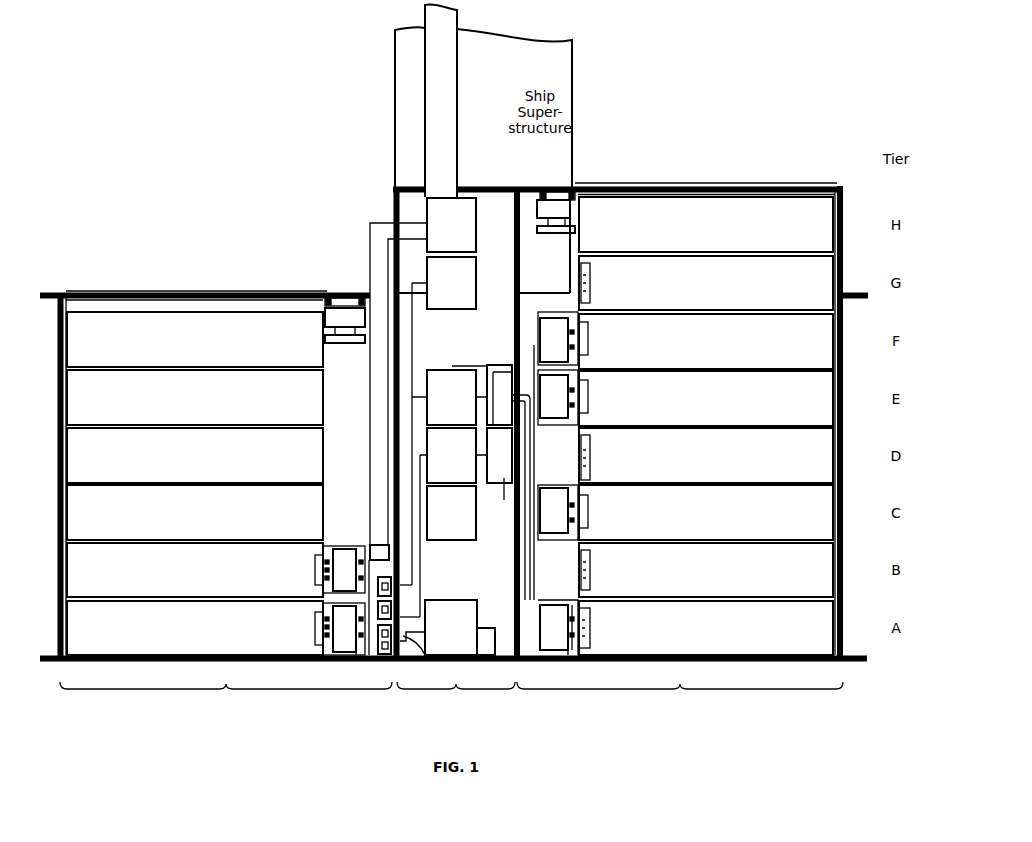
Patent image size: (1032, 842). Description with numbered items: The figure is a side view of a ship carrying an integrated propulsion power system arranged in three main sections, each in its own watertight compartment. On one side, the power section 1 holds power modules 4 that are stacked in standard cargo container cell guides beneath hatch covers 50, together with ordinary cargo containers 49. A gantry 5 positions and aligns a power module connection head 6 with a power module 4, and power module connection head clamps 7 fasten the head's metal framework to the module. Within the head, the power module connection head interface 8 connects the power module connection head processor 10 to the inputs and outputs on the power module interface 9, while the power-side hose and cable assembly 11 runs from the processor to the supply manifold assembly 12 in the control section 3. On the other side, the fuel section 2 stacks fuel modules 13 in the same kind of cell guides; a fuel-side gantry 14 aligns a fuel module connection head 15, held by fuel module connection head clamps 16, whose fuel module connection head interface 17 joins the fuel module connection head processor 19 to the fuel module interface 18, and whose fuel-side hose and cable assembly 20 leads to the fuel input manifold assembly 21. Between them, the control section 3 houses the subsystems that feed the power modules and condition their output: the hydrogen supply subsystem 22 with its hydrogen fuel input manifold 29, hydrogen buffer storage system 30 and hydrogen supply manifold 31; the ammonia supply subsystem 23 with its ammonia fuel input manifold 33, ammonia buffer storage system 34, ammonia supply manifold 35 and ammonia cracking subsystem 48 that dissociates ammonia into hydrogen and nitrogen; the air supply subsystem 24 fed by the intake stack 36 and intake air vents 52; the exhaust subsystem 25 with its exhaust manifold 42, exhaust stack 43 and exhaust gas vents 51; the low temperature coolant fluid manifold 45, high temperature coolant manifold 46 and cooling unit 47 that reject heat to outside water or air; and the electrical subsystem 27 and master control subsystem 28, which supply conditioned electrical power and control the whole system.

The power section 1 is at (226, 696).
The fuel section 2 is at (680, 696).
The control section 3 is at (456, 696).
The power module 4 is at (195, 599).
The gantry 5 is at (345, 300).
The power module connection head 6 is at (347, 546).
The power module connection head clamps 7 is at (325, 609).
The power module connection head interface 8 is at (324, 630).
The power module interface 9 is at (318, 627).
The power module connection head processor 10 is at (344, 629).
The power-side hose and cable assembly 11 is at (355, 662).
The supply manifold assembly 12 is at (383, 662).
The fuel module 13 is at (706, 455).
The fuel-side gantry 14 is at (563, 197).
The fuel module connection head 15 is at (556, 600).
The fuel module connection head clamps 16 is at (576, 605).
The fuel module connection head interface 17 is at (566, 655).
The fuel module interface 18 is at (590, 628).
The fuel module connection head processor 19 is at (554, 627).
The fuel-side hose and cable assembly 20 is at (536, 566).
The fuel input manifold assembly 21 is at (500, 378).
The hydrogen supply subsystem 22 is at (488, 366).
The ammonia supply subsystem 23 is at (455, 468).
The air supply subsystem 24 is at (451, 225).
The exhaust subsystem 25 is at (451, 225).
The electrical subsystem 27 is at (444, 421).
The master control subsystem 28 is at (444, 421).
The hydrogen fuel input manifold 29 is at (499, 395).
The hydrogen buffer storage system 30 is at (449, 397).
The hydrogen supply manifold 31 is at (400, 581).
The ammonia fuel input manifold 33 is at (499, 455).
The ammonia buffer storage system 34 is at (453, 522).
The ammonia supply manifold 35 is at (400, 609).
The intake stack 36 is at (441, 100).
The exhaust manifold 42 is at (379, 553).
The exhaust stack 43 is at (441, 100).
The low temperature coolant fluid manifold 45 is at (402, 662).
The high temperature coolant manifold 46 is at (418, 660).
The cooling unit 47 is at (460, 627).
The ammonia cracking subsystem 48 is at (451, 513).
The cargo containers 49 is at (450, 368).
The hatch covers 50 is at (195, 290).
The exhaust gas vents 51 is at (382, 427).
The intake air vents 52 is at (371, 240).